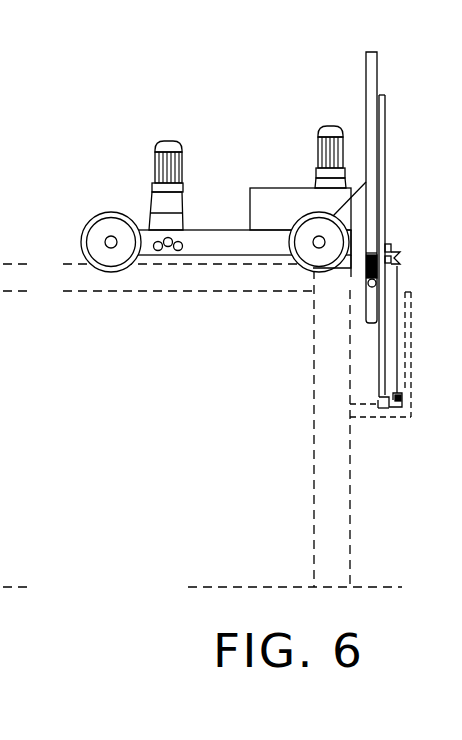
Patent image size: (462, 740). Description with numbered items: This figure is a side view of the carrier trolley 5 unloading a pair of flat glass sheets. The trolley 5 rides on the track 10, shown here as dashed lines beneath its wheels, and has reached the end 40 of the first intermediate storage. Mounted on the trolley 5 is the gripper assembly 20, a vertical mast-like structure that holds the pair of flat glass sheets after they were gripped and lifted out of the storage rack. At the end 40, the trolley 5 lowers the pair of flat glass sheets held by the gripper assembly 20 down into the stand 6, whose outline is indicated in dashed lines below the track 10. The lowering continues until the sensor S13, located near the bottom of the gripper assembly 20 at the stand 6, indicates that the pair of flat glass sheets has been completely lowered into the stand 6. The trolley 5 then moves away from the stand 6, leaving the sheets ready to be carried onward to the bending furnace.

The track 10 is at (83, 277).
The carrier trolley 5 is at (228, 243).
The end of the first intermediate storage 40 is at (333, 282).
The gripper assembly 20 is at (398, 236).
The sensor S13 is at (392, 410).
The stand 6 is at (362, 410).